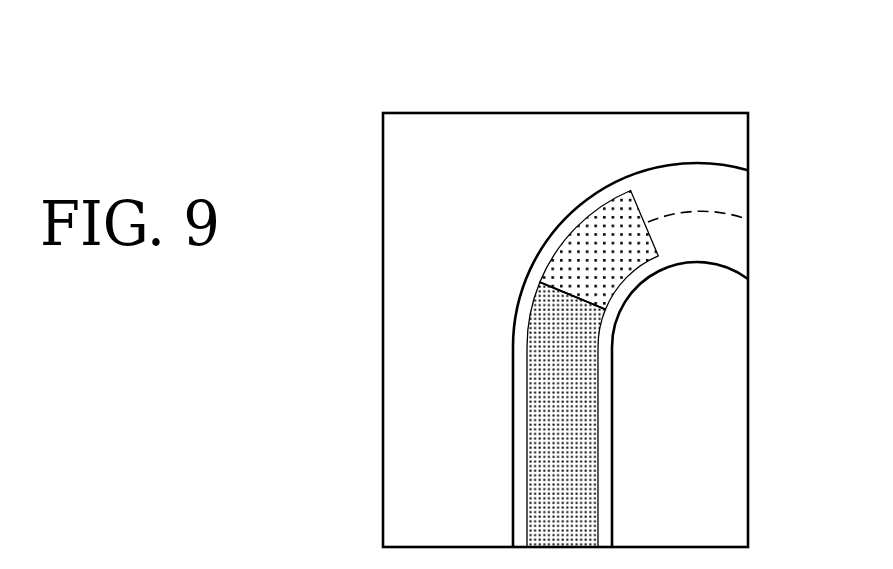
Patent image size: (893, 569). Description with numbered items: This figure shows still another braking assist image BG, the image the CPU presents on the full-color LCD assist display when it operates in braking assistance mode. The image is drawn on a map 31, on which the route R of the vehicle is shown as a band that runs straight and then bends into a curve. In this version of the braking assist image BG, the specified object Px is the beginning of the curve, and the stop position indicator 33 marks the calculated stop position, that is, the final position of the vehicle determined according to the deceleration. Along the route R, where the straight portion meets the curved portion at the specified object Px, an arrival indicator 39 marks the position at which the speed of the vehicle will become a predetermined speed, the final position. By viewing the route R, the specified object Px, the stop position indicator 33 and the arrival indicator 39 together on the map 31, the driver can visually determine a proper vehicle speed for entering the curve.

The braking assist image BG is at (446, 114).
The map 31 is at (448, 188).
The stop position indicator 33 is at (640, 200).
The specified object Px is at (530, 283).
The arrival indicator 39 is at (585, 294).
The route R is at (600, 438).